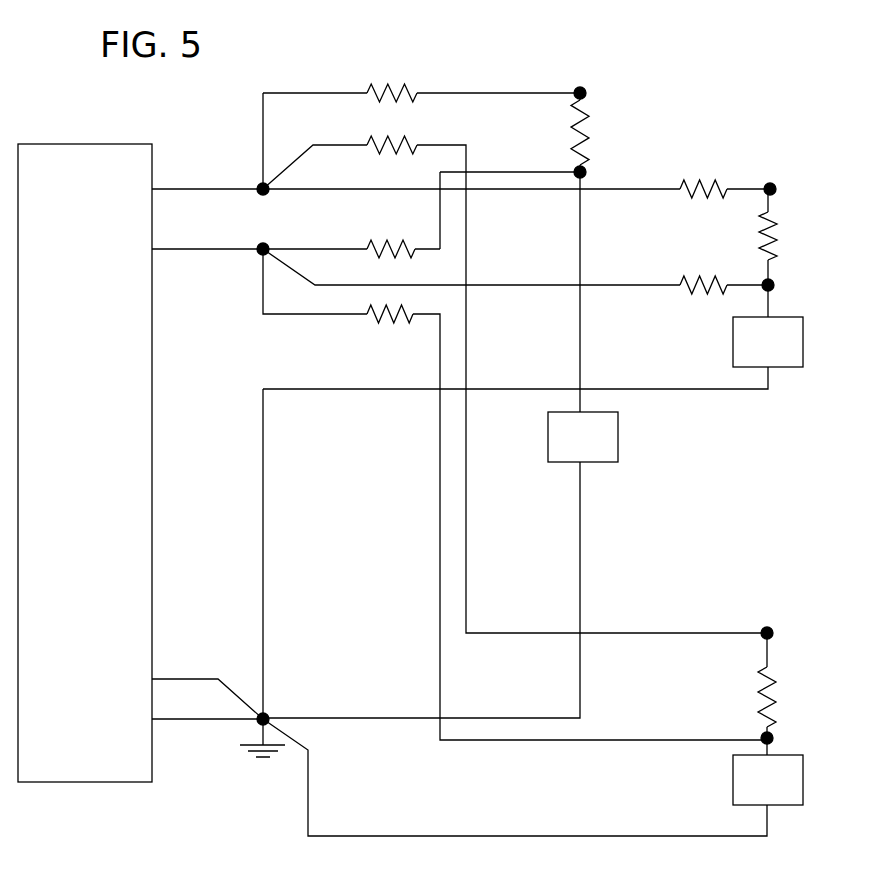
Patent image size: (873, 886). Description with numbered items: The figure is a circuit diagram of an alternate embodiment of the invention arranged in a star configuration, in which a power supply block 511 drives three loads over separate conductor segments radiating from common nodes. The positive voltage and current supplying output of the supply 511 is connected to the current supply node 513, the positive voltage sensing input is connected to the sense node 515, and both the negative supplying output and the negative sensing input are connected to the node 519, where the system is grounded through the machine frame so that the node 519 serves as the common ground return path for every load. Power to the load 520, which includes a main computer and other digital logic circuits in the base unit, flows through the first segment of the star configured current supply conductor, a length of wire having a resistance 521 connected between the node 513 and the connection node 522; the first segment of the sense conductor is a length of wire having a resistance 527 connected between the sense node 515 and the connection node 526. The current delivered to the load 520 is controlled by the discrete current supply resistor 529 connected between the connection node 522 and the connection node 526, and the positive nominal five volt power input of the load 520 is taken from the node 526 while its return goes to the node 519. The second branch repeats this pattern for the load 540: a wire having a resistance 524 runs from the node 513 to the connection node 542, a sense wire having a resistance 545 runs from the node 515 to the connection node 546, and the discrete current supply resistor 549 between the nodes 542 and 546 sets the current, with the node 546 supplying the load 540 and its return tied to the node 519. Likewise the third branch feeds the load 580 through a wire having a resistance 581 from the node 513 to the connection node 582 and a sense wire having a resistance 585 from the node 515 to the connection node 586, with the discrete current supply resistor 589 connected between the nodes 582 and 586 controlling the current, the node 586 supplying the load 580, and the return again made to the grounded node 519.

The power supply 511 is at (95, 143).
The current supply node 513 is at (263, 189).
The sense node 515 is at (263, 249).
The node 519 is at (263, 719).
The load 520 is at (795, 354).
The resistance 521 is at (682, 180).
The connection node 522 is at (767, 185).
The resistance 524 is at (390, 82).
The connection node 526 is at (770, 285).
The resistance 527 is at (715, 280).
The discrete current supply resistor 529 is at (773, 220).
The load 540 is at (607, 447).
The connection node 542 is at (583, 90).
The resistance 545 is at (393, 240).
The connection node 546 is at (577, 171).
The discrete current supply resistor 549 is at (585, 140).
The load 580 is at (795, 792).
The resistance 581 is at (390, 140).
The connection node 582 is at (767, 633).
The resistance 585 is at (397, 323).
The connection node 586 is at (767, 738).
The discrete current supply resistor 589 is at (758, 710).